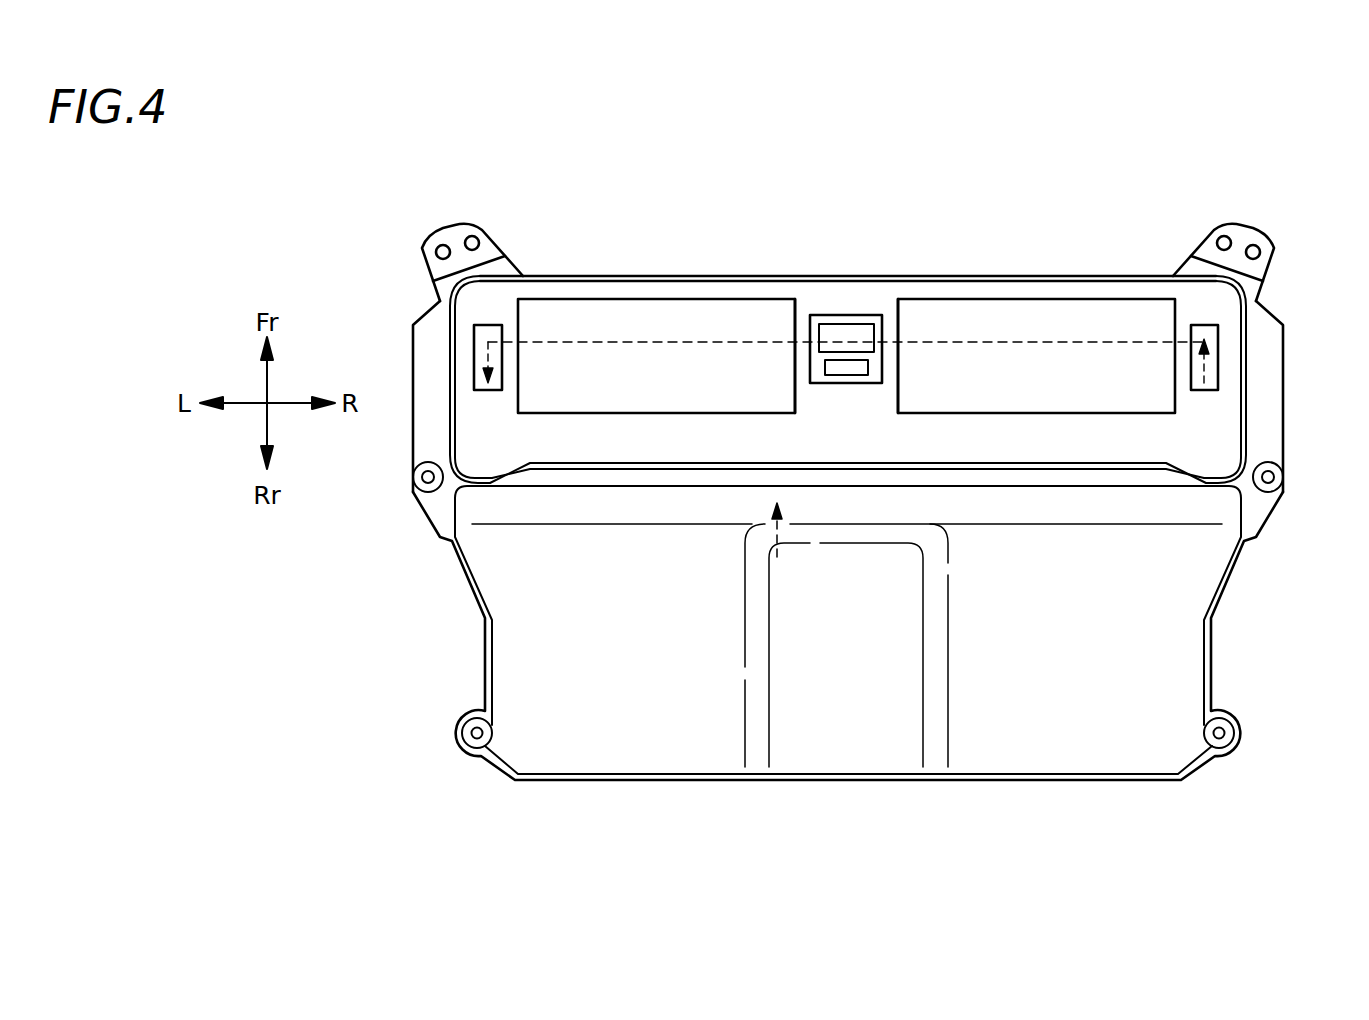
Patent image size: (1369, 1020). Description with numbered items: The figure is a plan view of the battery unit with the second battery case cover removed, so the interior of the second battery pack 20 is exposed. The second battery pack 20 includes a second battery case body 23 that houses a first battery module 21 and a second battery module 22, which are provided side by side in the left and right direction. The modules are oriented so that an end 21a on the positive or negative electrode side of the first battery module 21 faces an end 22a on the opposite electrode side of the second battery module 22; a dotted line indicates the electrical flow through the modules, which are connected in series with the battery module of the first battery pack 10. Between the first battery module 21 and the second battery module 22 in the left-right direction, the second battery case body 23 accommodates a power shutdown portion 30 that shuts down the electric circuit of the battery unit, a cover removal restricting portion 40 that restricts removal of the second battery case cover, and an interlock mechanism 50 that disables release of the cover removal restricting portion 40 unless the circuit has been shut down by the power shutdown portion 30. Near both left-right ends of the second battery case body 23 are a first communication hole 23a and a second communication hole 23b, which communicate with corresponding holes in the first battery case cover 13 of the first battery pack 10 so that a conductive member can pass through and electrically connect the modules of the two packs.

The first battery pack 10 is at (838, 502).
The first battery case cover 13 is at (482, 646).
The second battery pack 20 is at (577, 268).
The first battery module 21 is at (1035, 299).
The end of the first battery module 21a is at (890, 305).
The second battery module 22 is at (630, 298).
The end of the second battery module 22a is at (802, 311).
The second battery case body 23 is at (1110, 276).
The first communication hole 23a is at (1219, 335).
The second communication hole 23b is at (472, 341).
The power shutdown portion 30 is at (845, 324).
The cover removal restricting portion 40 is at (853, 368).
The interlock mechanism 50 is at (825, 315).